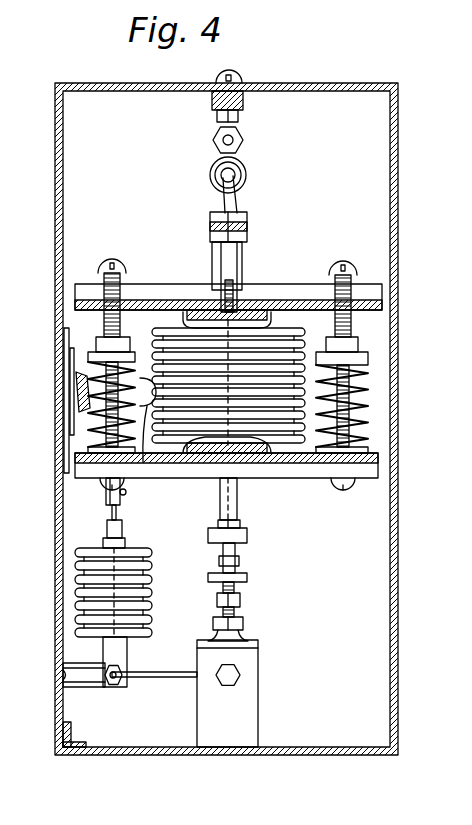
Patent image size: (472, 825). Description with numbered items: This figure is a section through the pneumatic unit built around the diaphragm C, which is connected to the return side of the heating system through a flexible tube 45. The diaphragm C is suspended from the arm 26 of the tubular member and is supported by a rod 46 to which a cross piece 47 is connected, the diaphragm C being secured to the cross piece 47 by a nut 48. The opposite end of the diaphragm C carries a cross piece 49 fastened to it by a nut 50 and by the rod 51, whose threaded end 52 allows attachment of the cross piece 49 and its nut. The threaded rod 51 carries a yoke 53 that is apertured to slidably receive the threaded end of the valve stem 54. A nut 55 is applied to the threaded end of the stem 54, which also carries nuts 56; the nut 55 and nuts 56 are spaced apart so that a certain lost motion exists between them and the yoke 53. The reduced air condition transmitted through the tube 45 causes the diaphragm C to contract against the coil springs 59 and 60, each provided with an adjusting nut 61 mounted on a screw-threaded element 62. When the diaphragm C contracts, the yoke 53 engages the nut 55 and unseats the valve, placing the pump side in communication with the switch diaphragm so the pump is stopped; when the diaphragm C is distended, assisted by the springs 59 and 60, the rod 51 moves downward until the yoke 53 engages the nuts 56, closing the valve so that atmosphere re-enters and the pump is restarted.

The arm 26 is at (247, 226).
The flexible tube 45 is at (215, 258).
The rod 46 is at (238, 285).
The cross piece 47 is at (288, 292).
The nut 48 is at (200, 312).
The diaphragm C is at (162, 345).
The cross piece 49 is at (302, 465).
The nut 50 is at (258, 456).
The rod 51 is at (222, 503).
The threaded end 52 is at (225, 462).
The yoke 53 is at (248, 540).
The valve stem 54 is at (236, 588).
The nut 55 is at (219, 561).
The nuts 56 is at (241, 603).
The coil spring 59 is at (96, 437).
The coil spring 60 is at (368, 396).
The adjusting nut 61 is at (358, 345).
The screw-threaded element 62 is at (345, 270).